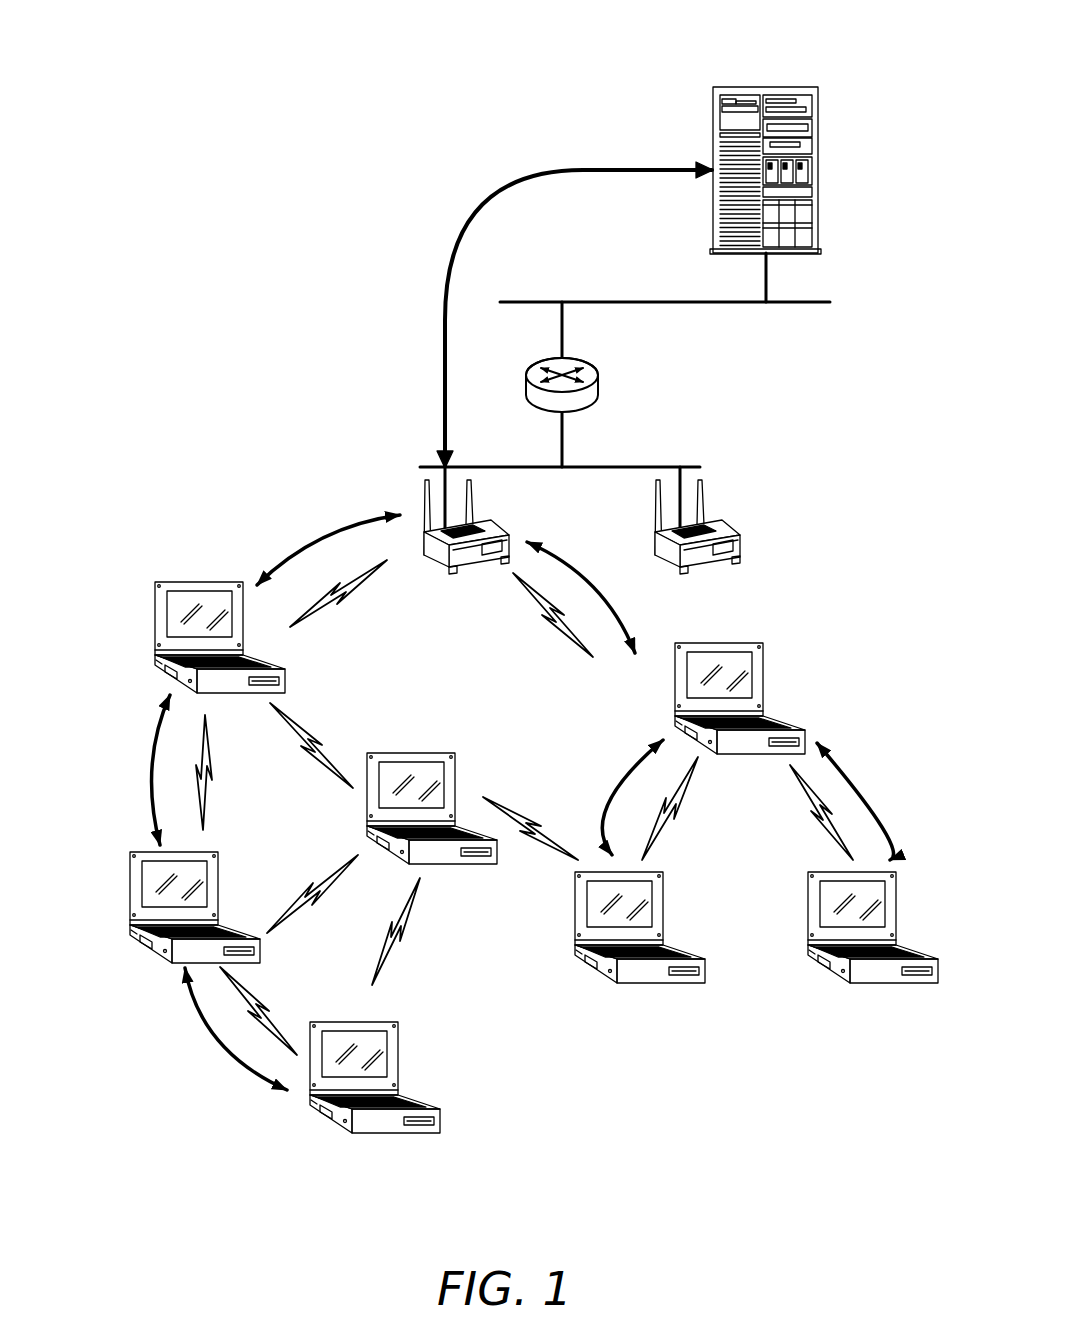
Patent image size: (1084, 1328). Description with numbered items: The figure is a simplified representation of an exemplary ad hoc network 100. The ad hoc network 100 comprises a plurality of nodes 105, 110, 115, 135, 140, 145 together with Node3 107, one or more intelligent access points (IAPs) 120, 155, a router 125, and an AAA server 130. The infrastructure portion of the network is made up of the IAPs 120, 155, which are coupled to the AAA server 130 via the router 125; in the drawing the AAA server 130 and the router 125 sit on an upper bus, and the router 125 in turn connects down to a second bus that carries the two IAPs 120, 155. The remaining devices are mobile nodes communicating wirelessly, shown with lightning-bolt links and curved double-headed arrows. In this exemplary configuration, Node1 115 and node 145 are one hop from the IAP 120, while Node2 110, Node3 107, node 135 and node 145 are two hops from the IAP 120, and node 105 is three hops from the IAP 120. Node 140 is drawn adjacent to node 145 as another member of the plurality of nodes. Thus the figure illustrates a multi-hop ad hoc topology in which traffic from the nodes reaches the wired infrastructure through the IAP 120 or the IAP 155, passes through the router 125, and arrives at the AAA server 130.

The ad hoc network 100 is at (442, 59).
The node 105 is at (399, 1051).
The Node3 107 is at (367, 818).
The Node2 110 is at (219, 870).
The Node1 115 is at (168, 582).
The intelligent access point 120 is at (489, 528).
The router 125 is at (600, 388).
The AAA server 130 is at (725, 87).
The node 135 is at (575, 898).
The node 140 is at (897, 905).
The node 145 is at (748, 645).
The intelligent access point 155 is at (720, 528).